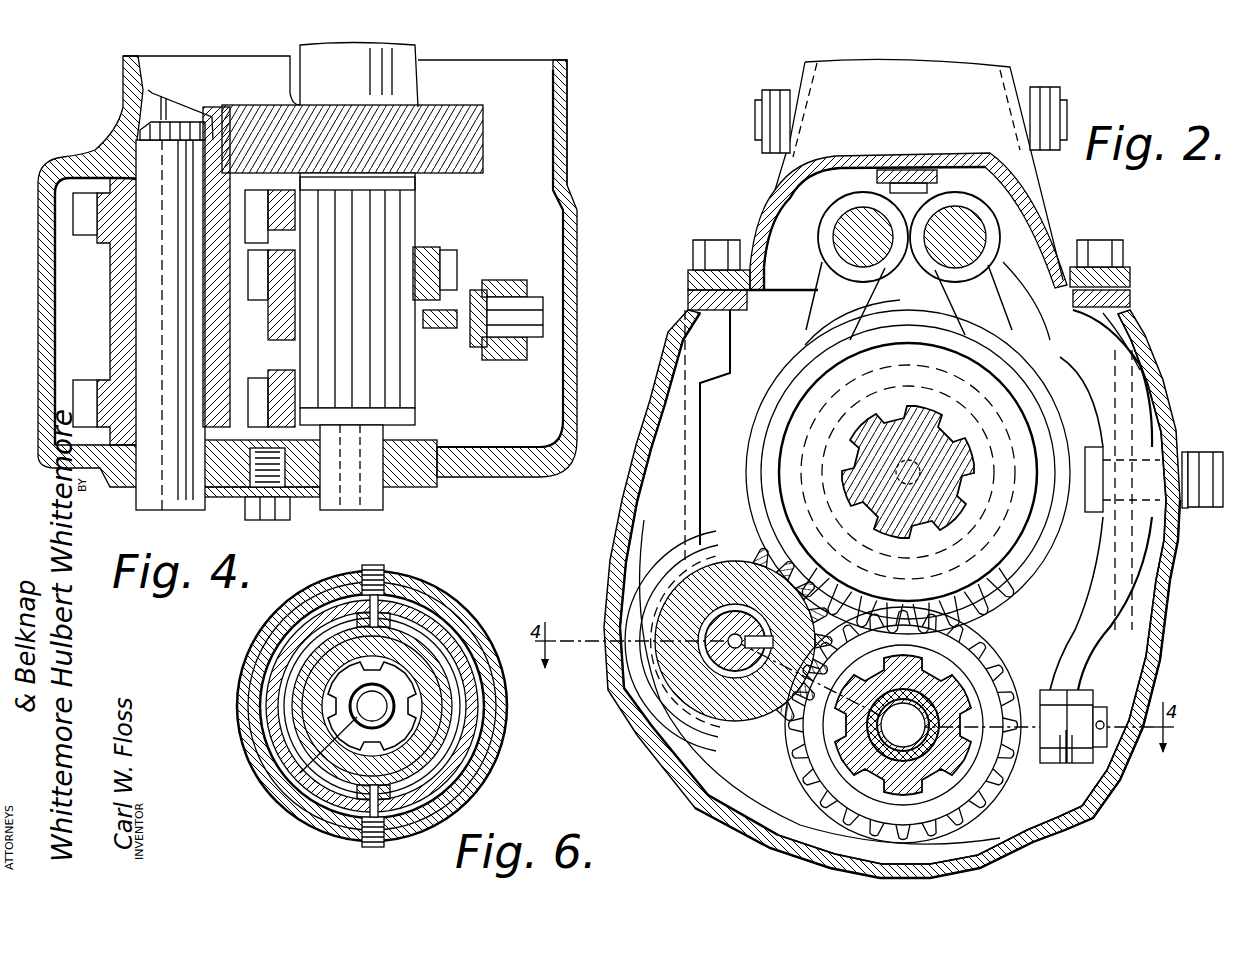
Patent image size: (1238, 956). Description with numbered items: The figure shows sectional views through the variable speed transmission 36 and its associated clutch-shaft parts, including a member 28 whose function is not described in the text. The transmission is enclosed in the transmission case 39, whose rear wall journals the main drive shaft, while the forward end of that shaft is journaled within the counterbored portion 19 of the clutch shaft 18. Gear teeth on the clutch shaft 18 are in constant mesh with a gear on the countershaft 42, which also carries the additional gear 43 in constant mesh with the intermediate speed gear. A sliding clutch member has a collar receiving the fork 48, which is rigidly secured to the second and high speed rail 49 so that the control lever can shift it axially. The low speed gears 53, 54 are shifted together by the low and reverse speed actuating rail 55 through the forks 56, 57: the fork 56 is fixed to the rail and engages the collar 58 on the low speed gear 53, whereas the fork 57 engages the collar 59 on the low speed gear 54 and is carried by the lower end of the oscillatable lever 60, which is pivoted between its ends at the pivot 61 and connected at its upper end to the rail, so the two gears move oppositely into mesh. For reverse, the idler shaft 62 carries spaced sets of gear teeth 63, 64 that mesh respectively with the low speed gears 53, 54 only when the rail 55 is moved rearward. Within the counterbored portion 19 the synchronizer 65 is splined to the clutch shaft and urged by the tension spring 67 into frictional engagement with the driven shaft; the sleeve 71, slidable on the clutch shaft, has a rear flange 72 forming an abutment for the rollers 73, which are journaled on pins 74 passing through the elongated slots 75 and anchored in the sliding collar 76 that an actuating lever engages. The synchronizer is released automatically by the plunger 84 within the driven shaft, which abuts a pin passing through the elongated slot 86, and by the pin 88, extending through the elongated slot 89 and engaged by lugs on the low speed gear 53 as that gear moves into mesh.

In FIG. 6, the clutch shaft 18 is at (487, 640).
In FIG. 6, the counterbored portion 19 is at (430, 687).
In FIG. 2, the clutch member 28 is at (943, 500).
In FIG. 2, the variable speed transmission 36 is at (680, 778).
In FIG. 4, the transmission case 39 is at (573, 373).
In FIG. 2, the transmission case 39 is at (640, 498).
In FIG. 2, the countershaft 42 is at (883, 777).
In FIG. 4, the additional gear 43 is at (467, 148).
In FIG. 2, the fork 48 is at (818, 312).
In FIG. 2, the second and high speed rail 49 is at (850, 228).
In FIG. 2, the low speed gear 53 is at (977, 607).
In FIG. 4, the low speed gear 54 is at (447, 260).
In FIG. 2, the low speed gear 54 is at (945, 667).
In FIG. 2, the low and reverse speed actuating rail 55 is at (975, 240).
In FIG. 2, the fork 56 is at (997, 300).
In FIG. 4, the fork 57 is at (467, 342).
In FIG. 2, the fork 57 is at (1040, 705).
In FIG. 2, the collar 58 is at (1090, 512).
In FIG. 4, the collar 59 is at (438, 337).
In FIG. 4, the oscillatable lever 60 is at (513, 360).
In FIG. 2, the oscillatable lever 60 is at (1105, 600).
In FIG. 2, the pivot 61 is at (1195, 452).
In FIG. 4, the idler shaft 62 is at (143, 313).
In FIG. 2, the idler shaft 62 is at (735, 612).
In FIG. 4, the gear teeth 63 is at (257, 393).
In FIG. 4, the gear teeth 64 is at (90, 235).
In FIG. 2, the gear teeth 64 is at (790, 715).
In FIG. 6, the synchronizer 65 is at (400, 720).
In FIG. 6, the tension spring 67 is at (300, 773).
In FIG. 6, the sleeve 71 is at (405, 668).
In FIG. 6, the flange 72 is at (335, 627).
In FIG. 6, the rollers 73 is at (420, 580).
In FIG. 6, the pins 74 is at (380, 565).
In FIG. 6, the elongated slots 75 is at (365, 808).
In FIG. 6, the collar 76 is at (243, 677).
In FIG. 2, the plunger 84 is at (917, 472).
In FIG. 4, the elongated slot 86 is at (567, 173).
In FIG. 2, the pin 88 is at (912, 390).
In FIG. 2, the elongated slot 89 is at (904, 472).